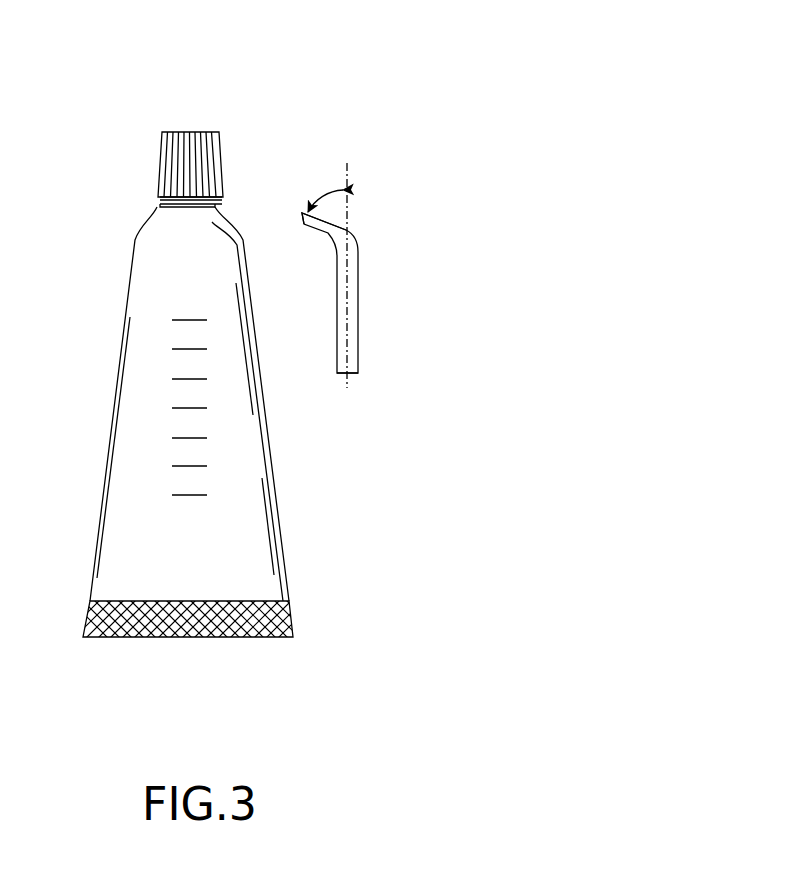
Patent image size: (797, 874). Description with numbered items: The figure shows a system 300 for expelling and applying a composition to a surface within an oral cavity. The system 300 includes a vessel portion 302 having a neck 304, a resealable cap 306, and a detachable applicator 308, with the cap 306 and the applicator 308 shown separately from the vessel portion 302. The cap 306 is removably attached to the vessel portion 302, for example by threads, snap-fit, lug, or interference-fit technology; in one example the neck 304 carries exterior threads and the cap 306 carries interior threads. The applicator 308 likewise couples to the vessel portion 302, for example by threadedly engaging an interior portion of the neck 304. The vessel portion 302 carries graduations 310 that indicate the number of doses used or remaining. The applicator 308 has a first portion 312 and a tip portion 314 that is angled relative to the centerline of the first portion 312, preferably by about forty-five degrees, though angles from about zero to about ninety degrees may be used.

The system 300 is at (410, 96).
The vessel portion 302 is at (287, 532).
The neck 304 is at (158, 205).
The cap 306 is at (162, 152).
The detachable applicator 308 is at (359, 325).
The graduations 310 is at (200, 466).
The first portion 312 is at (359, 360).
The tip portion 314 is at (323, 227).